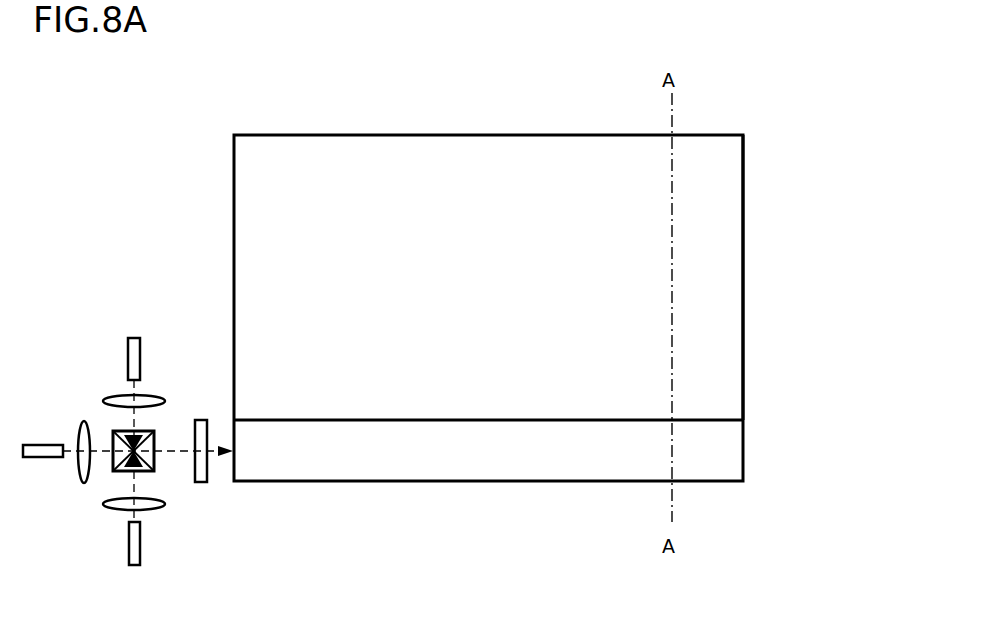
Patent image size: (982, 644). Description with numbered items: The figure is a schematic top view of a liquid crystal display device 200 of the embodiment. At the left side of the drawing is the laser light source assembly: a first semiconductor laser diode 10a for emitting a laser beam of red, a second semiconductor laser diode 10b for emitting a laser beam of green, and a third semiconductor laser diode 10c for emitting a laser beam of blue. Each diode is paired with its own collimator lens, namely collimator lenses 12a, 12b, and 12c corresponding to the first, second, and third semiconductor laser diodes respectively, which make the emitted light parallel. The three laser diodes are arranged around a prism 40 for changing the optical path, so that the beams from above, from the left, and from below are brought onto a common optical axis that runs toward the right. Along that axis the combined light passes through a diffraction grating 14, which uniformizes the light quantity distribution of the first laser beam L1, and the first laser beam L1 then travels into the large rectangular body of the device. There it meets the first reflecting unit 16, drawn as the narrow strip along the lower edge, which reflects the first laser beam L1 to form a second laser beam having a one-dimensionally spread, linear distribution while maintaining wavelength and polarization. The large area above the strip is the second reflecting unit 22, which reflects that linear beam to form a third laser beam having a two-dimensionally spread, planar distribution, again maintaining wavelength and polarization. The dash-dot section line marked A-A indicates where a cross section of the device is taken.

The liquid crystal display device 200 is at (453, 128).
The second reflecting unit 22 is at (754, 295).
The first reflecting unit 16 is at (764, 458).
The first semiconductor laser diode 10a is at (141, 360).
The second semiconductor laser diode 10b is at (50, 445).
The third semiconductor laser diode 10c is at (129, 540).
The collimator lens 12a is at (117, 395).
The collimator lens 12b is at (78, 467).
The collimator lens 12c is at (150, 509).
The prism 40 is at (114, 431).
The diffraction grating 14 is at (200, 420).
The first laser beam L1 is at (163, 458).